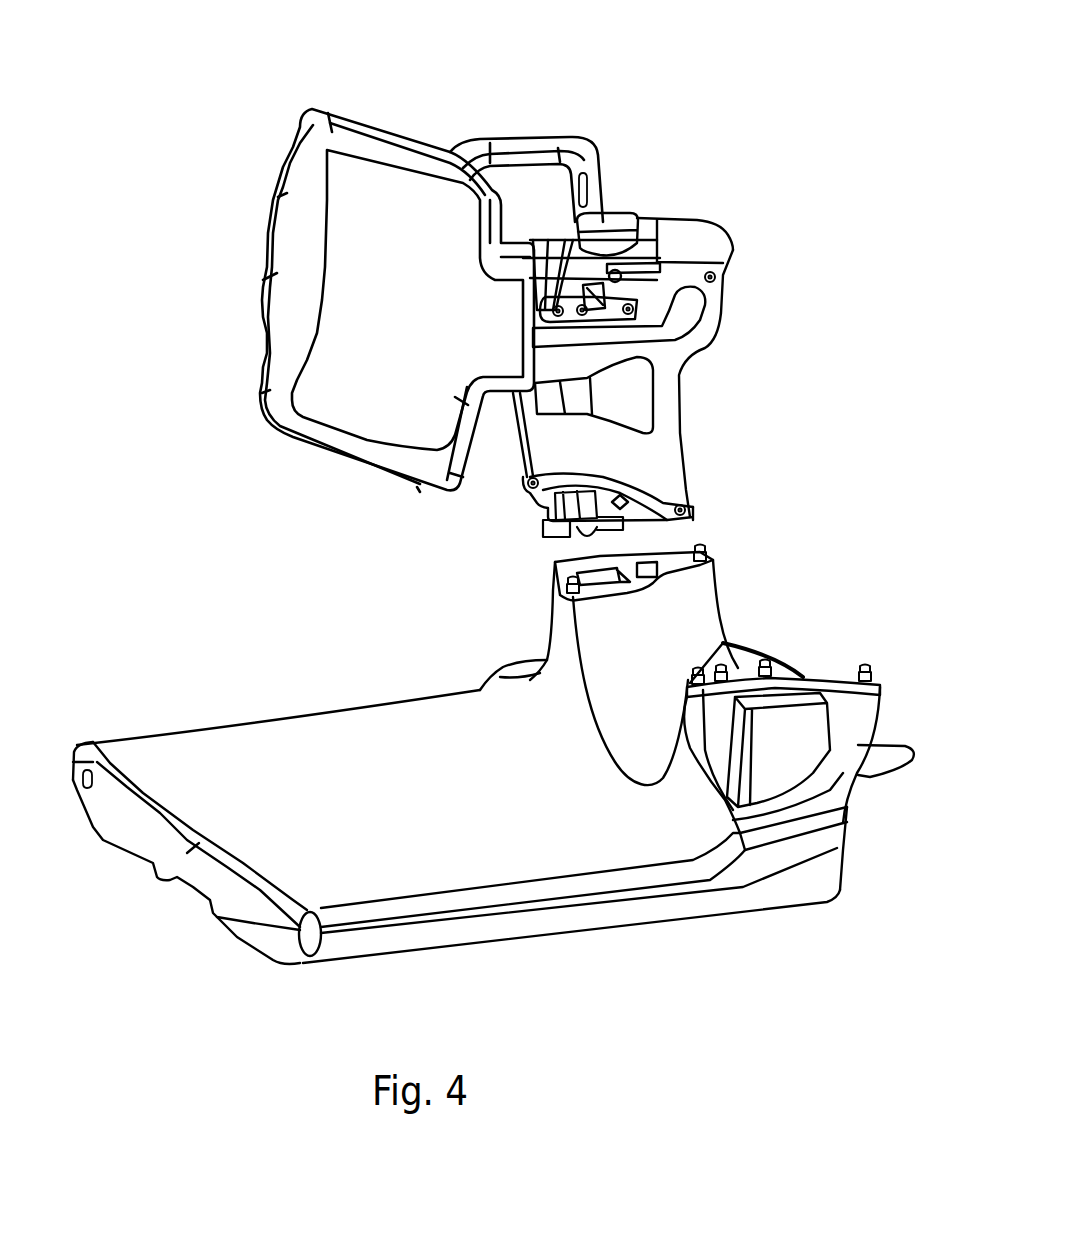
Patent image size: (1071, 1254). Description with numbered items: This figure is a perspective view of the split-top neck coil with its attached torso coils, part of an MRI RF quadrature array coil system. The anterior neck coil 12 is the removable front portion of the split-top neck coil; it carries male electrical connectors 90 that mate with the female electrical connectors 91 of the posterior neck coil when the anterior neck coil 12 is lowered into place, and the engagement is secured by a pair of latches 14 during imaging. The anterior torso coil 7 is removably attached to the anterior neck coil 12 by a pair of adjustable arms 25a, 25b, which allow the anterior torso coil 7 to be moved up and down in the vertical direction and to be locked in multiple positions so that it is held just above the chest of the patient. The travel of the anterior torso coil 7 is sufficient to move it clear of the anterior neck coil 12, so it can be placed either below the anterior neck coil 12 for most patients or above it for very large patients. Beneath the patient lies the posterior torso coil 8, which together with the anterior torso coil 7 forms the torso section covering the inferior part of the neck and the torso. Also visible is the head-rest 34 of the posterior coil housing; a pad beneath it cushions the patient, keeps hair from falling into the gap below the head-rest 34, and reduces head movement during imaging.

The anterior torso coil 7 is at (390, 197).
The adjustable arm 25a is at (577, 153).
The latches 14 is at (643, 218).
The anterior neck coil 12 is at (553, 440).
The male electrical connectors 90 is at (700, 282).
The adjustable arm 25b is at (540, 527).
The female electrical connectors 91 is at (590, 578).
The head-rest 34 is at (880, 777).
The posterior torso coil 8 is at (563, 922).